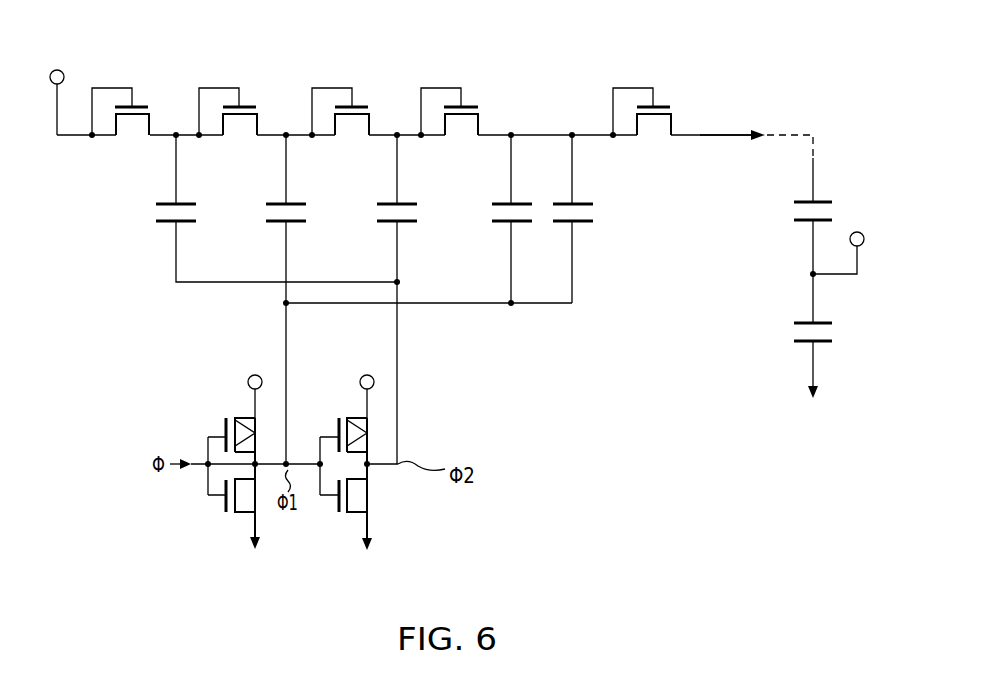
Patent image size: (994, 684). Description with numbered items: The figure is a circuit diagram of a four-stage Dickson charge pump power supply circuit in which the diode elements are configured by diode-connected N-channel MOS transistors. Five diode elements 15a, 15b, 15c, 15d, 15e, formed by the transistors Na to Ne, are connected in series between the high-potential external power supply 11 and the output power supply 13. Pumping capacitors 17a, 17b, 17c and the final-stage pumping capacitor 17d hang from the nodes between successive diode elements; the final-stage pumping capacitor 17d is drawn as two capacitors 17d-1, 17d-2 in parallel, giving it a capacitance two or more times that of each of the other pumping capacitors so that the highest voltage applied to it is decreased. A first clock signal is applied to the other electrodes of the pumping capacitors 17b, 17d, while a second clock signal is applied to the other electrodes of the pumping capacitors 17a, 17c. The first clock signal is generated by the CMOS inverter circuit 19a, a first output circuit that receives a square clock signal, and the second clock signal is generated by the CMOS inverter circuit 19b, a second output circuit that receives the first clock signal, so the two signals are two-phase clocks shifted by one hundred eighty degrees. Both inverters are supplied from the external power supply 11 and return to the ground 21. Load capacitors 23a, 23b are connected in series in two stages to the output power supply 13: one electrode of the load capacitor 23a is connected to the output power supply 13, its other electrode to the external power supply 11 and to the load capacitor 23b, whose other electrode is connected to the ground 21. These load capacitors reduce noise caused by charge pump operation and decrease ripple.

The external power supply 11 is at (57, 69).
The output power supply 13 is at (763, 128).
The diode element 15a is at (150, 101).
The diode element 15b is at (257, 101).
The diode element 15c is at (370, 101).
The diode element 15d is at (480, 101).
The diode element 15e is at (671, 100).
The pumping capacitor 17a is at (193, 226).
The pumping capacitor 17b is at (303, 226).
The pumping capacitor 17c is at (415, 226).
The final-stage pumping capacitor 17d is at (665, 243).
The capacitor 17d-1 is at (522, 228).
The capacitor 17d-2 is at (585, 227).
The CMOS inverter circuit 19a is at (240, 463).
The CMOS inverter circuit 19b is at (352, 464).
The ground 21 is at (255, 556).
The load capacitor 23a is at (788, 211).
The load capacitor 23b is at (788, 334).